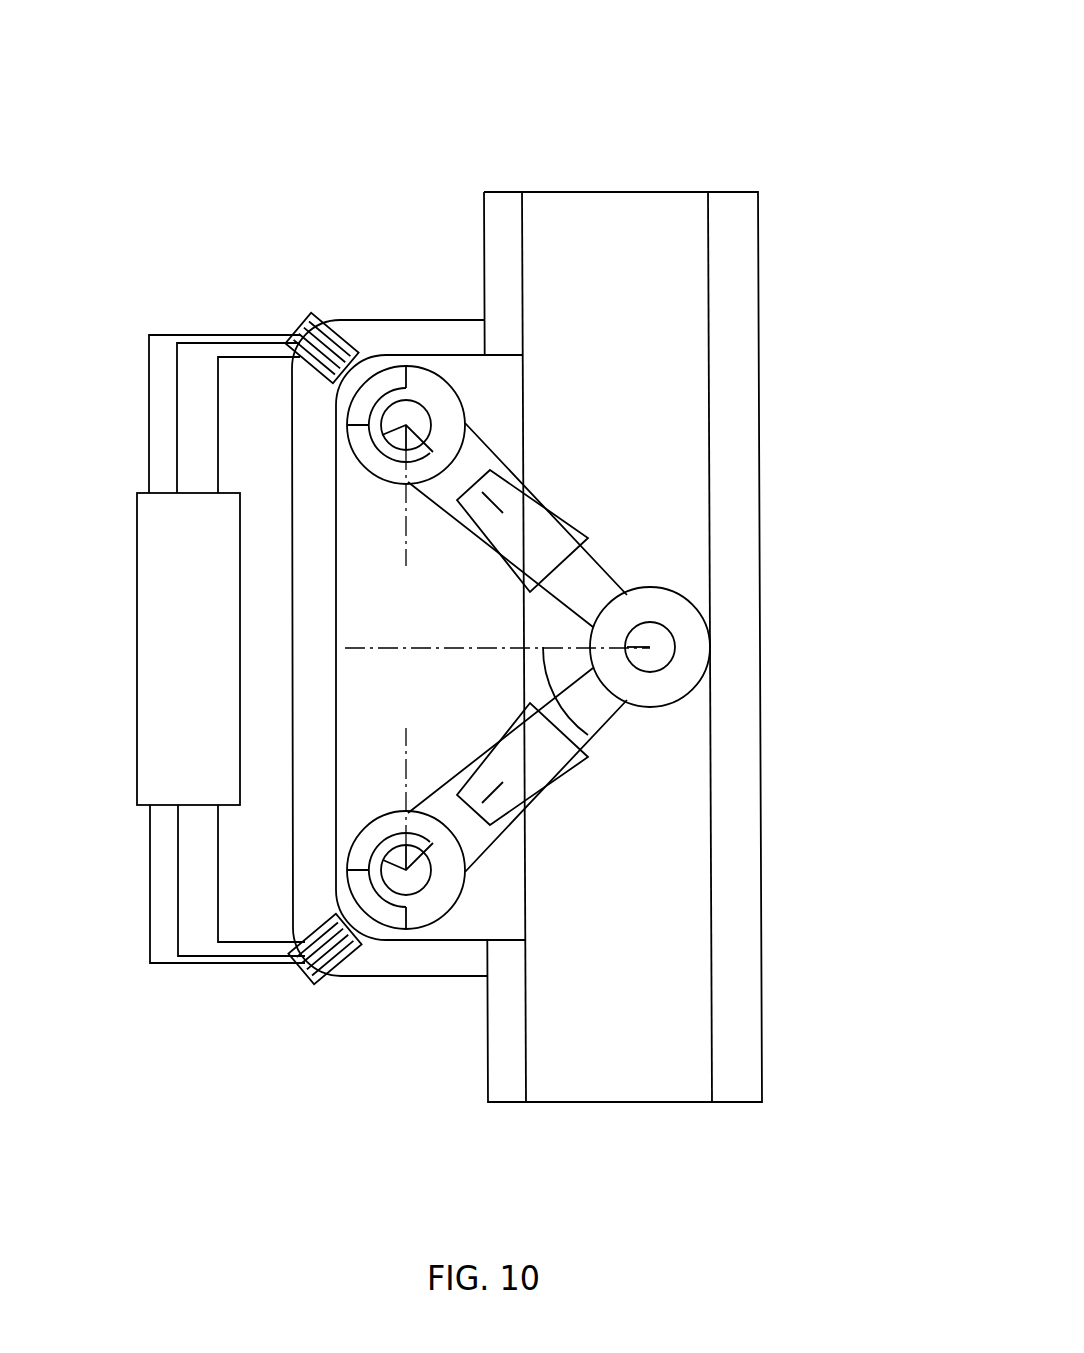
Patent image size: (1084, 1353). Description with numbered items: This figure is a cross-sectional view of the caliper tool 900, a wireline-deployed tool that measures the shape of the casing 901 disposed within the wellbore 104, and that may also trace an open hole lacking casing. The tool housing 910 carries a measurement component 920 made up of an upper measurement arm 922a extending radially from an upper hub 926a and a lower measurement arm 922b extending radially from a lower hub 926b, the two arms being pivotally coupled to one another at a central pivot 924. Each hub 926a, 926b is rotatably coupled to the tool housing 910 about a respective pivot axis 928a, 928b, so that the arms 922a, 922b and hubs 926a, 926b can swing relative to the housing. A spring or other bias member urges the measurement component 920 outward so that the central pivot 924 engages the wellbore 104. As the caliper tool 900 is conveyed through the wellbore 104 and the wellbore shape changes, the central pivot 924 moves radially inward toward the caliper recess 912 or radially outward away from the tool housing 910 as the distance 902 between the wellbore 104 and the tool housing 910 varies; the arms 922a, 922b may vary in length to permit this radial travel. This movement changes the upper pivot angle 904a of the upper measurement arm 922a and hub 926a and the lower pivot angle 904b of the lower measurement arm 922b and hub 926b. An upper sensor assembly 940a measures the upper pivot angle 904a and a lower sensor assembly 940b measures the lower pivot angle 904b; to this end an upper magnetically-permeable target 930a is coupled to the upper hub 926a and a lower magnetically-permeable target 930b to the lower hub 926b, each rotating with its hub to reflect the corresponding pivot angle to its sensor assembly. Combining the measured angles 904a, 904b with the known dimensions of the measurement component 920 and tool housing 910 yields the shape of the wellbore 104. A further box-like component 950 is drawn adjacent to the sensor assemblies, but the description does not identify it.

The caliper tool 900 is at (862, 45).
The wellbore 104 is at (642, 93).
The casing 901 is at (707, 217).
The tool housing 910 is at (525, 193).
The caliper recess 912 is at (343, 778).
The measurement component 920 is at (672, 558).
The upper measurement arm 922a is at (567, 515).
The lower measurement arm 922b is at (570, 780).
The central pivot 924 is at (697, 642).
The distance 902 is at (590, 735).
The upper pivot angle 904a is at (466, 410).
The lower pivot angle 904b is at (466, 882).
The upper hub 926a is at (373, 452).
The lower hub 926b is at (373, 842).
The upper pivot axis 928a is at (406, 425).
The lower pivot axis 928b is at (406, 870).
The upper magnetically-permeable target 930a is at (388, 372).
The lower magnetically-permeable target 930b is at (390, 937).
The upper sensor assembly 940a is at (318, 318).
The lower sensor assembly 940b is at (322, 983).
The controller 950 is at (140, 568).